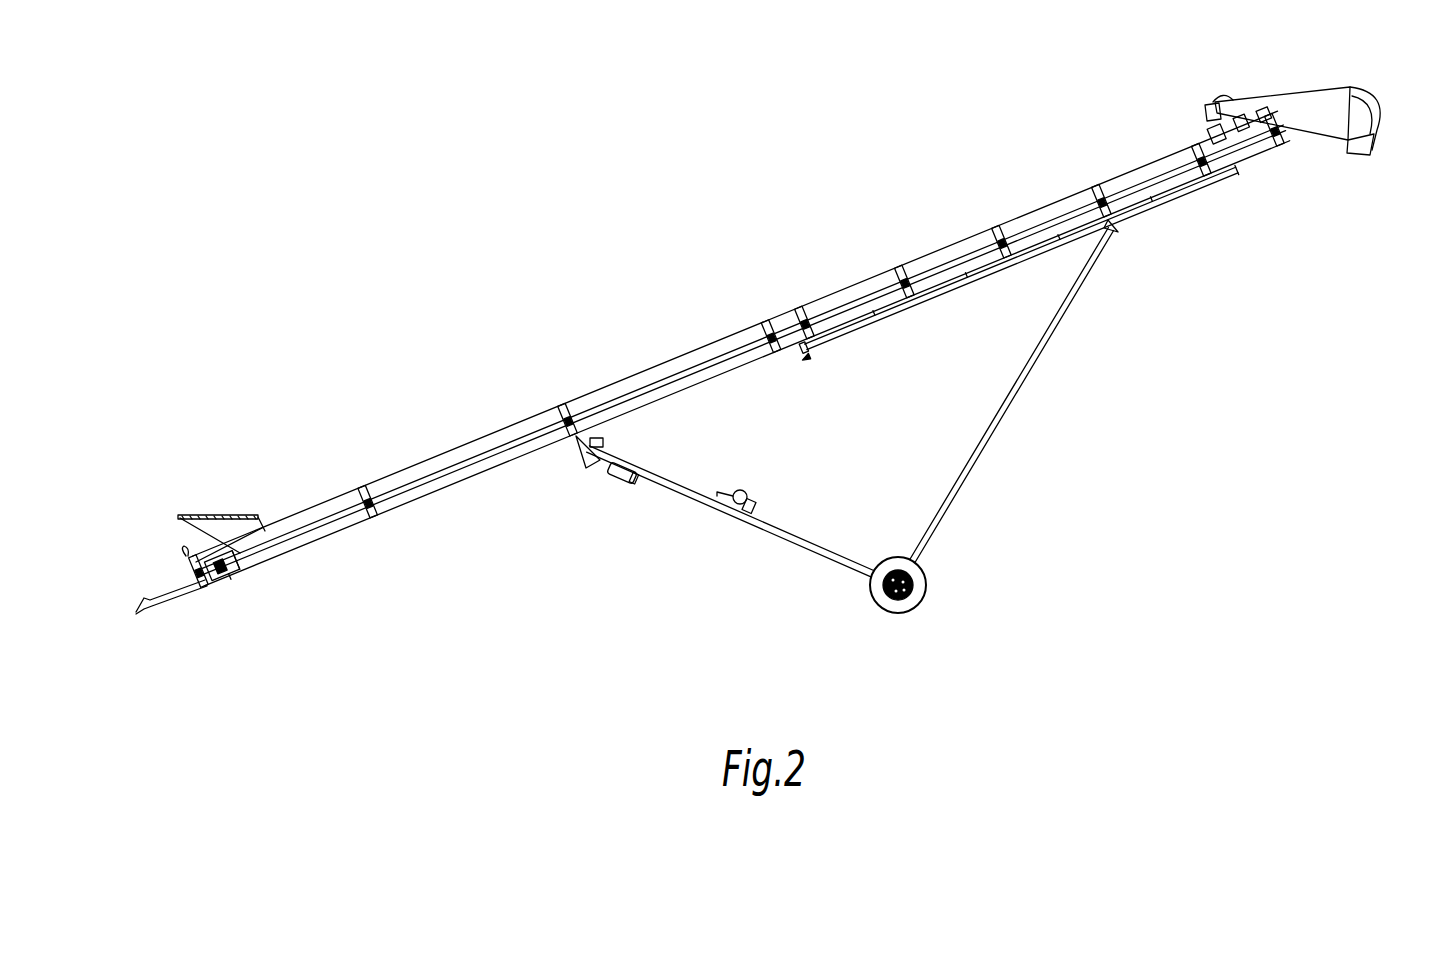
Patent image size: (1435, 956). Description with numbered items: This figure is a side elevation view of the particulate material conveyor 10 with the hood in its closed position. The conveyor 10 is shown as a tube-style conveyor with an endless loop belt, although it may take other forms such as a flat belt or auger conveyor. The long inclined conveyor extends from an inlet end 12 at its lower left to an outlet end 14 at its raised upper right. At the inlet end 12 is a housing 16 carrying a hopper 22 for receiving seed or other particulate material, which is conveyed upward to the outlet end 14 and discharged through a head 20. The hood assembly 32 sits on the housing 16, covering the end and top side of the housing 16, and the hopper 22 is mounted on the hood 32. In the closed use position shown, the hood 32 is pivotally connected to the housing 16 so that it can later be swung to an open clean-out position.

The particulate material conveyor 10 is at (636, 250).
The inlet end 12 is at (245, 471).
The outlet end 14 is at (1338, 158).
The housing 16 is at (246, 570).
The head 20 is at (1366, 116).
The hopper 22 is at (205, 522).
The hood assembly 32 is at (206, 558).